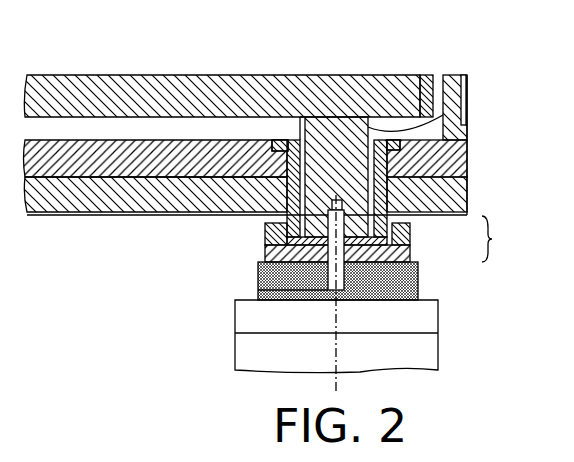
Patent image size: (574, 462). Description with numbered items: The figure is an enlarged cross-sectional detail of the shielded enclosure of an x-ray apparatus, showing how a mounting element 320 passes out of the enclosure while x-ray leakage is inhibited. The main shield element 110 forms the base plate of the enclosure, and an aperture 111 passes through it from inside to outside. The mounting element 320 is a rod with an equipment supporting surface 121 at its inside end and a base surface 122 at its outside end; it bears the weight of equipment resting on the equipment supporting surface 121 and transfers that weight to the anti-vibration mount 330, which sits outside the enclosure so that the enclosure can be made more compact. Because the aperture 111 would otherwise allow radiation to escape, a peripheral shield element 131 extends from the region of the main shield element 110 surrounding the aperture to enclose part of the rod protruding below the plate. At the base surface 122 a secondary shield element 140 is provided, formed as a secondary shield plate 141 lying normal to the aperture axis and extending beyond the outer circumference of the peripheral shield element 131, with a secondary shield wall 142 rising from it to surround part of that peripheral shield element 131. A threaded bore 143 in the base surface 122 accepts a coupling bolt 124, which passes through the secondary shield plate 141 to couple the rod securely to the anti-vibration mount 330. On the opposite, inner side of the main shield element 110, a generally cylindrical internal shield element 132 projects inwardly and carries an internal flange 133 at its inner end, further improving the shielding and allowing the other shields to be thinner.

The main shield element 110 is at (458, 194).
The aperture 111 is at (388, 172).
The equipment supporting surface 121 is at (347, 117).
The base surface 122 is at (280, 226).
The coupling bolt 124 is at (328, 270).
The peripheral shield element 131 is at (263, 242).
The internal shield element 132 is at (300, 118).
The internal flange 133 is at (279, 140).
The secondary shield element 140 is at (508, 239).
The secondary shield plate 141 is at (412, 252).
The secondary shield wall 142 is at (410, 236).
The threaded bore 143 is at (344, 294).
The mounting element 320 is at (443, 115).
The anti-vibration mount 330 is at (438, 358).